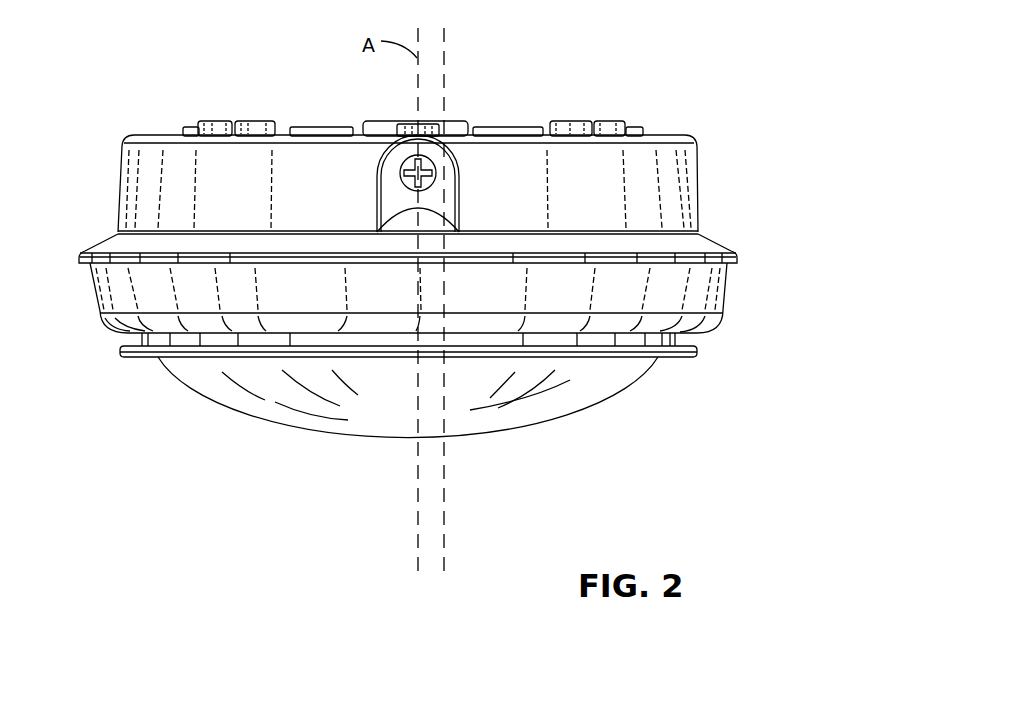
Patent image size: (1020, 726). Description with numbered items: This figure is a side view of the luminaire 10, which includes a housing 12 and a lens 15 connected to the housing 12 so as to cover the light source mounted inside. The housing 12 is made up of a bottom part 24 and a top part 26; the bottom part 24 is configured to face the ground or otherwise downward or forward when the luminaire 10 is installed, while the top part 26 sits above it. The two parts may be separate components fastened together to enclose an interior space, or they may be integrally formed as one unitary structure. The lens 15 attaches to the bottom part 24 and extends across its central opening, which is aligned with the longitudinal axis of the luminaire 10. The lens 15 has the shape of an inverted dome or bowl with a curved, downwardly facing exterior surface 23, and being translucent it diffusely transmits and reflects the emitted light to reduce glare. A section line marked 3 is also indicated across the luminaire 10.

The luminaire 10 is at (70, 132).
The housing 12 is at (746, 258).
The lens 15 is at (408, 399).
The exterior surface 23 is at (538, 420).
The bottom part 24 is at (710, 293).
The top part 26 is at (682, 173).
The section line 3- 3 is at (433, 30).